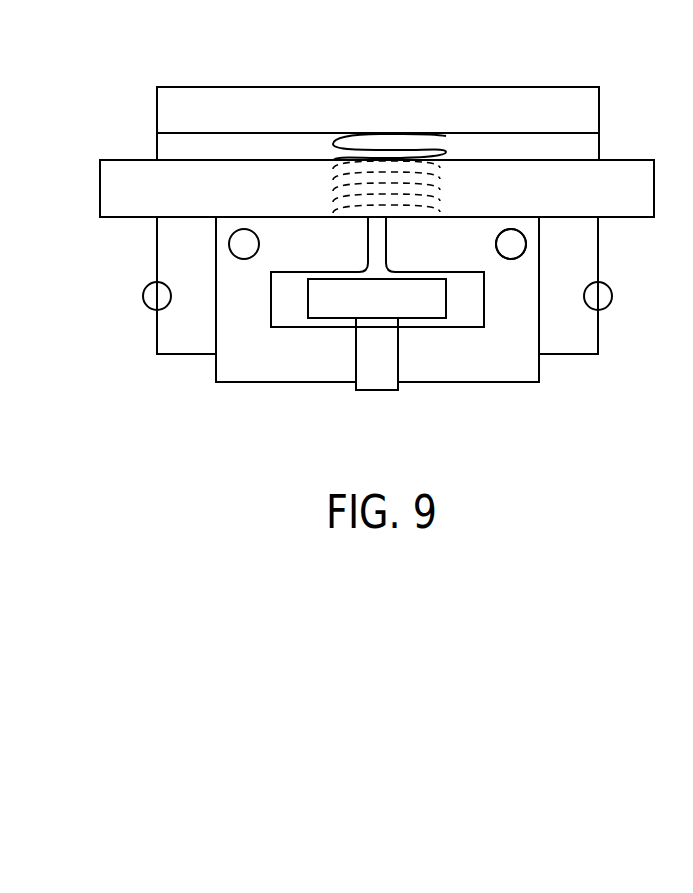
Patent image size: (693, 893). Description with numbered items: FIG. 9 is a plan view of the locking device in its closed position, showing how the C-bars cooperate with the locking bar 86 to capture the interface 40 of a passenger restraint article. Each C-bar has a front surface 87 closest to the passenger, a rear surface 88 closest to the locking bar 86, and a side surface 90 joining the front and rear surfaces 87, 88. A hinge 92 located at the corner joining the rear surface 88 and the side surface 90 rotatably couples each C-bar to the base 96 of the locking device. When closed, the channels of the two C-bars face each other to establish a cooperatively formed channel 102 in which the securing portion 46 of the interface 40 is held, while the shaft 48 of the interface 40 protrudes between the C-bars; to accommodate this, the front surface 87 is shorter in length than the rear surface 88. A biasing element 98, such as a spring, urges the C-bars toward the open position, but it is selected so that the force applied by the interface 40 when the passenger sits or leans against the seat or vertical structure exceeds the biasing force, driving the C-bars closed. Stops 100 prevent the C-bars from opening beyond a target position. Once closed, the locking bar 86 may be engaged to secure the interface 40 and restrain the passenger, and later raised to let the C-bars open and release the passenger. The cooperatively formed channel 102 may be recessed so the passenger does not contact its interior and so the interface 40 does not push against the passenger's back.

The interface 40 is at (413, 396).
The securing portion 46 is at (325, 298).
The shaft 48 is at (382, 372).
The locking bar 86 is at (617, 190).
The front surface 87 is at (333, 383).
The rear surface 88 is at (292, 216).
The side surface 90 is at (216, 322).
The hinge 92 is at (510, 244).
The base 96 is at (545, 105).
The biasing element 98 is at (400, 136).
The stops 100 is at (600, 296).
The cooperatively formed channel 102 is at (468, 304).